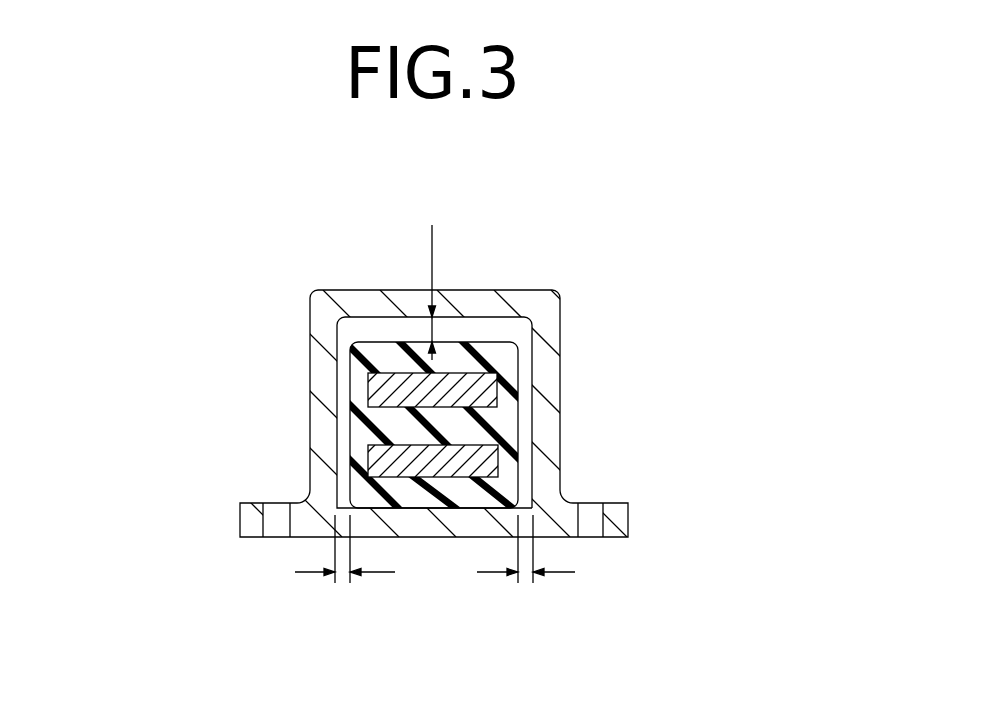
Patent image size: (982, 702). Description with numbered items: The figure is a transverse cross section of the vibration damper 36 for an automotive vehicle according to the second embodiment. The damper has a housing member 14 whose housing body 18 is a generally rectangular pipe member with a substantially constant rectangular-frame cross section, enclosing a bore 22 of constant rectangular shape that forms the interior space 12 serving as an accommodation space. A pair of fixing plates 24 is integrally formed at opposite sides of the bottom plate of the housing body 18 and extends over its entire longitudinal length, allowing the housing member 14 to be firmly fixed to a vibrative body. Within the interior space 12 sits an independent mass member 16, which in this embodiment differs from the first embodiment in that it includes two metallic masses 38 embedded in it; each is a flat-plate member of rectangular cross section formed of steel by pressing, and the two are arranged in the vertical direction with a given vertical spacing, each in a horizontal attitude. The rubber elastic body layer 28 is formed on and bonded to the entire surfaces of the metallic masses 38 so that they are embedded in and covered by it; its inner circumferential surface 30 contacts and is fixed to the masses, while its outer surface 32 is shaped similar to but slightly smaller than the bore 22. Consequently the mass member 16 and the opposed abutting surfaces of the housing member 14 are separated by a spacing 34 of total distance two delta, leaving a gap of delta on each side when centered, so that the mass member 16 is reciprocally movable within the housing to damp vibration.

The interior space 12 is at (483, 328).
The housing member 14 is at (300, 315).
The independent mass member 16 is at (383, 333).
The housing body 18 is at (327, 388).
The bore 22 is at (534, 341).
The fixing plates 24 is at (253, 522).
The rubber elastic body layer 28 is at (360, 433).
The inner circumferential surface 30 is at (437, 403).
The outer surface 32 is at (348, 377).
The spacing 34 is at (358, 472).
The vibration damper 36 is at (563, 258).
The metallic masses 38 is at (483, 385).